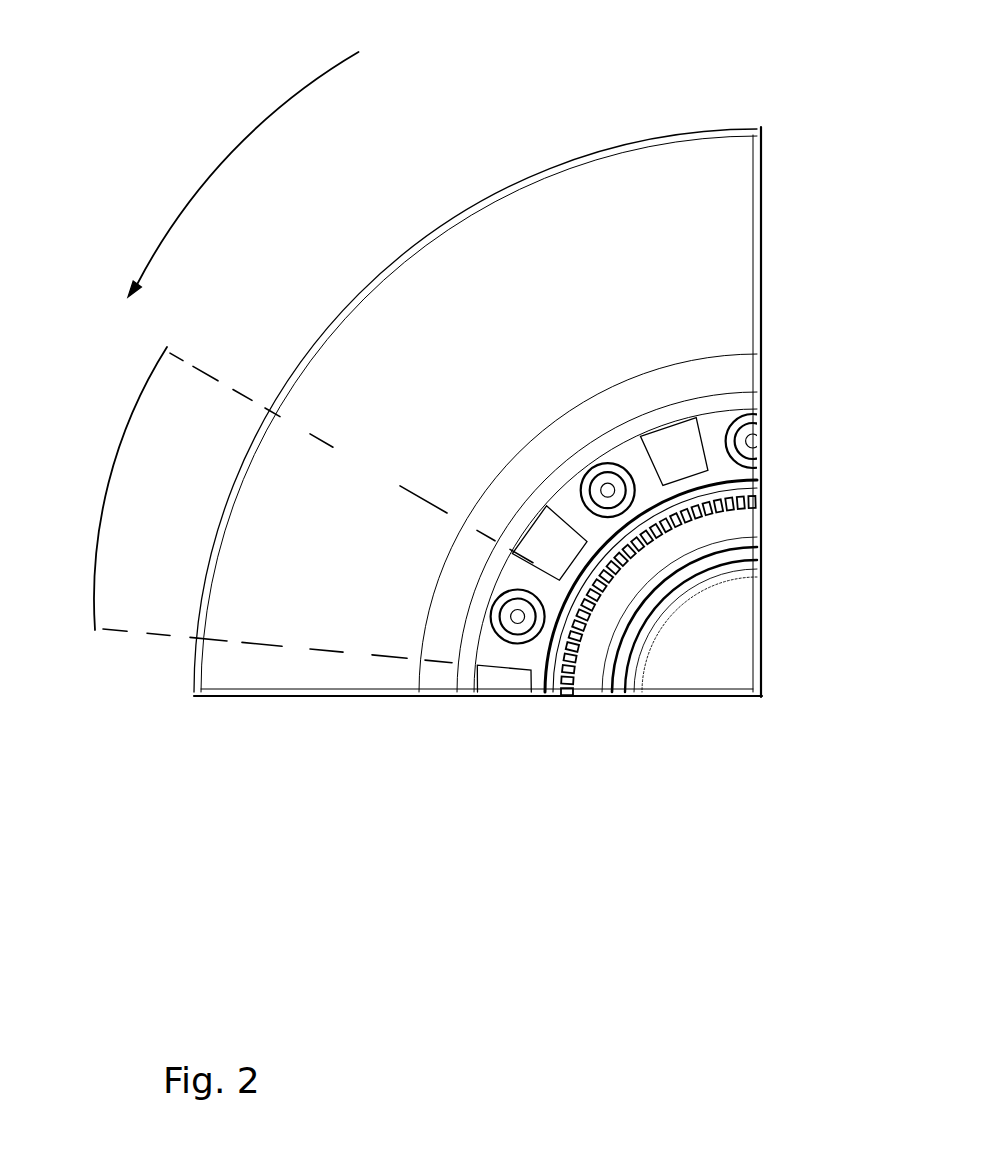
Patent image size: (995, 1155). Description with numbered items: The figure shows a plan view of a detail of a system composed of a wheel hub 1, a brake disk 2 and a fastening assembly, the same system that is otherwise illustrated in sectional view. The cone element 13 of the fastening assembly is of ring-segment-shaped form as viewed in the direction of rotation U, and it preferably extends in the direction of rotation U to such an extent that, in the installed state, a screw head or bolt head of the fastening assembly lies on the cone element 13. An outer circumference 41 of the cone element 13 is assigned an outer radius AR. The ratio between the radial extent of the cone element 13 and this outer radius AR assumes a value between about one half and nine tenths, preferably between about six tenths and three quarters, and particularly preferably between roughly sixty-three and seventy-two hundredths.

The wheel hub 1 is at (722, 530).
The brake disk 2 is at (648, 165).
The cone element 13 is at (598, 532).
The outer circumference 41 is at (597, 452).
The outer radius AR is at (112, 467).
The direction of rotation U is at (227, 158).